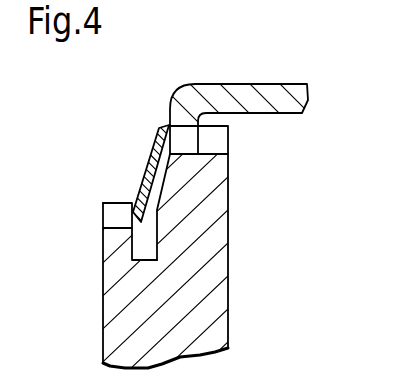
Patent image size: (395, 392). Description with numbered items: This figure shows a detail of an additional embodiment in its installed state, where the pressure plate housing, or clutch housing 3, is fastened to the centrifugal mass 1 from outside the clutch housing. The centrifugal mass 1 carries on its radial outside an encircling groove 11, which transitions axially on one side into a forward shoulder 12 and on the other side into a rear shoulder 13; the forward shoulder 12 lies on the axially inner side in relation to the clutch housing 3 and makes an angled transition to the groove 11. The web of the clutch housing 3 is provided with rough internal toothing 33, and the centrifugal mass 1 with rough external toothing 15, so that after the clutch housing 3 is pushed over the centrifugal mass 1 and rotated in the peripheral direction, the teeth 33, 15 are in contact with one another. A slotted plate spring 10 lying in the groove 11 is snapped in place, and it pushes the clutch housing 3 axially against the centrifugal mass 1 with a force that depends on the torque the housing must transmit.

The centrifugal mass 1 is at (117, 352).
The clutch housing 3 is at (292, 96).
The plate spring 10 is at (148, 175).
The encircling groove 11 is at (118, 284).
The forward shoulder 12 is at (120, 243).
The rear shoulder 13 is at (213, 307).
The external toothing 15 is at (222, 142).
The internal toothing 33 is at (185, 142).